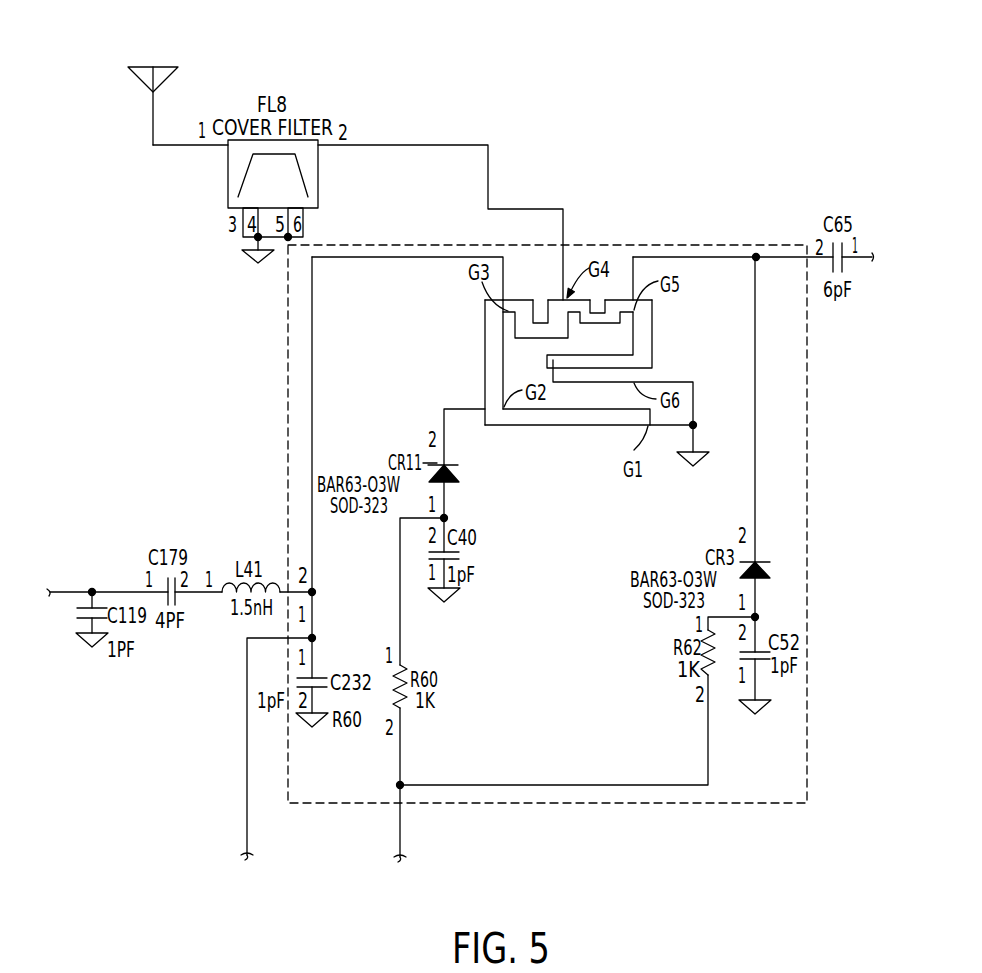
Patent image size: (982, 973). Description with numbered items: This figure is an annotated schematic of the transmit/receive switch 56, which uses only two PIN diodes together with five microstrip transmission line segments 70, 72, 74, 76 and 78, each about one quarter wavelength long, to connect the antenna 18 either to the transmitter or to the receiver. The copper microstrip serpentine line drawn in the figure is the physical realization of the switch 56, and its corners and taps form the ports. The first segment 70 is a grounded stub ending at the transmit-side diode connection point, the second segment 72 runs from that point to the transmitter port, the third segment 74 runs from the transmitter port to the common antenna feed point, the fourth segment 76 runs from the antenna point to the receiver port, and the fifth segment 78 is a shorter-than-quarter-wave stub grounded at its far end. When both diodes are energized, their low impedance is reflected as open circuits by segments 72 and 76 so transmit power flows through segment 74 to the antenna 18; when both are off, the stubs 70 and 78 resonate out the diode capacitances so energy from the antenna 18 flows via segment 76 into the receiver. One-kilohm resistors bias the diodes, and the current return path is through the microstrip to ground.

The antenna 18 is at (166, 82).
The T/R switch 56 is at (807, 610).
The first transmission line segment 70 is at (543, 420).
The second transmission line segment 72 is at (492, 362).
The third transmission line segment 74 is at (521, 307).
The fourth transmission line segment 76 is at (613, 307).
The fifth transmission line segment 78 is at (652, 336).